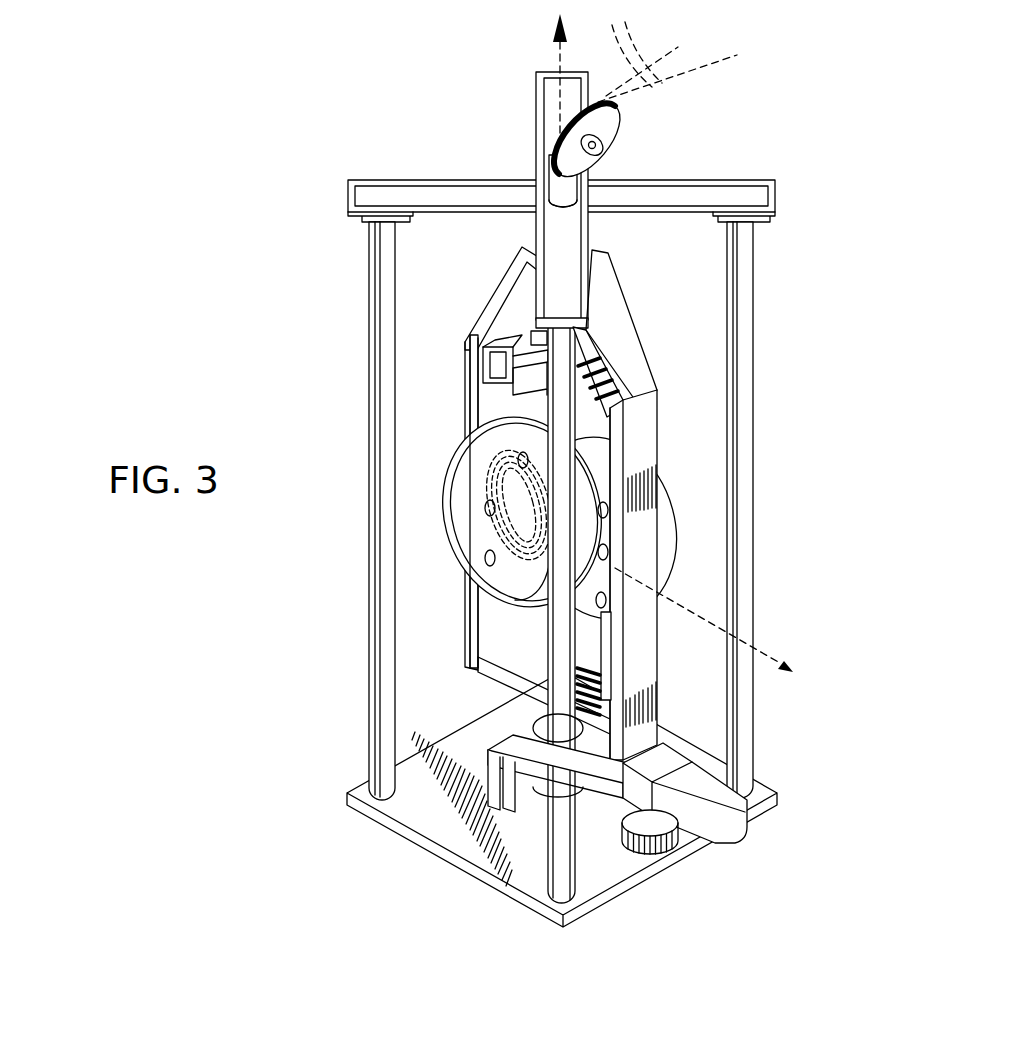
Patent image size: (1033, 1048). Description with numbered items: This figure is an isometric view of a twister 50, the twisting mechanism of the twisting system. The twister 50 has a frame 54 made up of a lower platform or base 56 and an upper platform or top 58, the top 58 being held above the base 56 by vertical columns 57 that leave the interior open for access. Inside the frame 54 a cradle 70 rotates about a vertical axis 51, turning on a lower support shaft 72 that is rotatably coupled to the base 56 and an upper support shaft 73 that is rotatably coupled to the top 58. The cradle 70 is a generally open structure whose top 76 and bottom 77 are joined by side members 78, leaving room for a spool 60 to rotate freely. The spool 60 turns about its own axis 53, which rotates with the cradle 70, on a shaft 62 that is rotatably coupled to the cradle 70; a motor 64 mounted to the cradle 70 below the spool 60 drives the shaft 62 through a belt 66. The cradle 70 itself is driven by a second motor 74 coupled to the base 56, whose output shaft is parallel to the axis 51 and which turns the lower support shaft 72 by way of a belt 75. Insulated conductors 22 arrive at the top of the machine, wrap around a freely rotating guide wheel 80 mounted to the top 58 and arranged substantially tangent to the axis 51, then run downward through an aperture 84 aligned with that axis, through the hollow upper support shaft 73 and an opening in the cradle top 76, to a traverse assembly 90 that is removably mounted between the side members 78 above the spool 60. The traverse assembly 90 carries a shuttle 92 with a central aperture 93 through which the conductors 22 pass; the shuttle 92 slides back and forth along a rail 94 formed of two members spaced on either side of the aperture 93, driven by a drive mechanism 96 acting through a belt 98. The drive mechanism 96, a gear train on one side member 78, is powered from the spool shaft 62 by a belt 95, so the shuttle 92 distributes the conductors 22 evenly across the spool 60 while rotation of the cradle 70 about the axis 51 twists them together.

The insulated conductors 22 is at (667, 51).
The twister 50 is at (789, 113).
The axis 51 is at (557, 52).
The axis 53 is at (770, 655).
The frame 54 is at (747, 225).
The base 56 is at (437, 823).
The vertical columns 57 is at (377, 373).
The top 58 is at (433, 197).
The spool 60 is at (670, 505).
The shaft 62 is at (604, 551).
The motor 64 is at (598, 673).
The belt 66 is at (612, 625).
The cradle 70 is at (645, 368).
The lower support shaft 72 is at (540, 725).
The upper support shaft 73 is at (522, 234).
The motor 74 is at (735, 825).
The belt 75 is at (613, 826).
The top 76 is at (604, 272).
The bottom 77 is at (485, 678).
The side members 78 is at (653, 420).
The guide wheel 80 is at (610, 122).
The aperture 84 is at (553, 185).
The traverse assembly 90 is at (470, 280).
The shuttle 92 is at (477, 437).
The central aperture 93 is at (542, 338).
The rail 94 is at (596, 412).
The belt 95 is at (468, 408).
The drive mechanism 96 is at (487, 364).
The belt 98 is at (582, 378).